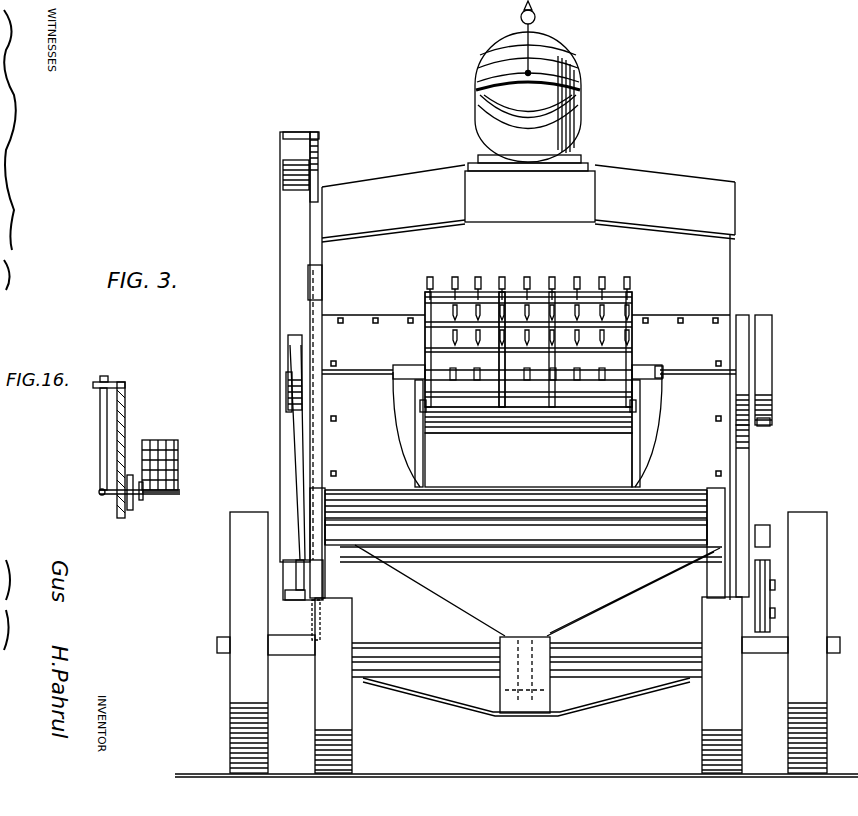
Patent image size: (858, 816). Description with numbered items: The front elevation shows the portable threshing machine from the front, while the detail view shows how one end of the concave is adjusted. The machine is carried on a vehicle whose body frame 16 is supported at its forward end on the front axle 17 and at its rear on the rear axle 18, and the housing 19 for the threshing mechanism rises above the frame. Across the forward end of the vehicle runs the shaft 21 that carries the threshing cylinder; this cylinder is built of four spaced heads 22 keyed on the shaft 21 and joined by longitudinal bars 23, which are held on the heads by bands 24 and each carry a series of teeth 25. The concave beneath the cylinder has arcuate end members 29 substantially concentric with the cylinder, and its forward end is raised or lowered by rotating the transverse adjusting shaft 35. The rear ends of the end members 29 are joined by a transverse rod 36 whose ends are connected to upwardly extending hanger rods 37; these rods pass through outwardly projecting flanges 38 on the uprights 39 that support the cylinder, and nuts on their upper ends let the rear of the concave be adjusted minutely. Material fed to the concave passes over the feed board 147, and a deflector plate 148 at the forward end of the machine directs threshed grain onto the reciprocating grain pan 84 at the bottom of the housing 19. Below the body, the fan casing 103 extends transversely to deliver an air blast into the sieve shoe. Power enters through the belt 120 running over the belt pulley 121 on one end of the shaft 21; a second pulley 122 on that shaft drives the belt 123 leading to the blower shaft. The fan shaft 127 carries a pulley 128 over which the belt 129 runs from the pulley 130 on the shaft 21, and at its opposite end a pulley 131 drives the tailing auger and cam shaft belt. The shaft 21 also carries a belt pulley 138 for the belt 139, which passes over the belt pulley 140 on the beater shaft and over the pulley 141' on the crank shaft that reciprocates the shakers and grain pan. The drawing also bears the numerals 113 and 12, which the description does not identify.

In FIG. 3, the lamp 113 is at (584, 103).
In FIG. 3, the housing 19 is at (528, 382).
In FIG. 3, the shaft 21 is at (420, 350).
In FIG. 3, the heads 22 is at (502, 292).
In FIG. 3, the bars 23 is at (445, 340).
In FIG. 3, the bands 24 is at (552, 290).
In FIG. 3, the teeth 25 is at (432, 280).
In FIG. 3, the feed board 147 is at (520, 420).
In FIG. 3, the deflector plate 148 is at (495, 488).
In FIG. 3, the uprights 39 is at (426, 475).
In FIG. 16, the uprights 39 is at (125, 415).
In FIG. 3, the adjusting shaft 35 is at (410, 432).
In FIG. 3, the hanger rods 37 is at (645, 440).
In FIG. 16, the hanger rods 37 is at (100, 430).
In FIG. 3, the flanges 38 is at (656, 366).
In FIG. 16, the flanges 38 is at (115, 382).
In FIG. 3, the end members 29 is at (420, 408).
In FIG. 16, the end members 29 is at (130, 510).
In FIG. 3, the grain pan 84 is at (523, 560).
In FIG. 3, the front axle 17 is at (463, 700).
In FIG. 3, the body frame 16 is at (330, 600).
In FIG. 3, the fan casing 103 is at (726, 620).
In FIG. 3, the rear axle 18 is at (290, 655).
In FIG. 3, the pulley 141' is at (301, 659).
In FIG. 3, the wheel / screen 12 is at (772, 540).
In FIG. 16, the wheel / screen 12 is at (170, 437).
In FIG. 3, the belt pulley 140 is at (306, 280).
In FIG. 3, the belt 139 is at (312, 318).
In FIG. 3, the belt pulley 138 is at (288, 355).
In FIG. 3, the pulley 130 is at (288, 390).
In FIG. 3, the belt 129 is at (292, 436).
In FIG. 3, the pulley 128 is at (290, 590).
In FIG. 3, the shaft 127 is at (285, 612).
In FIG. 3, the second pulley 122 is at (752, 338).
In FIG. 3, the belt pulley 121 is at (772, 358).
In FIG. 3, the belt 120 is at (770, 425).
In FIG. 3, the belt 123 is at (749, 450).
In FIG. 3, the pulley 131 is at (772, 600).
In FIG. 16, the transverse rod 36 is at (172, 495).